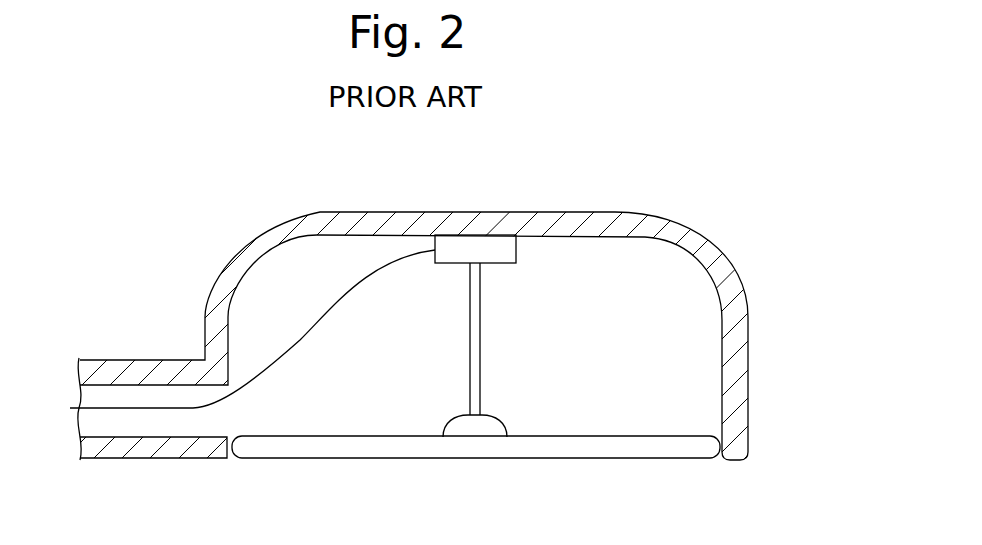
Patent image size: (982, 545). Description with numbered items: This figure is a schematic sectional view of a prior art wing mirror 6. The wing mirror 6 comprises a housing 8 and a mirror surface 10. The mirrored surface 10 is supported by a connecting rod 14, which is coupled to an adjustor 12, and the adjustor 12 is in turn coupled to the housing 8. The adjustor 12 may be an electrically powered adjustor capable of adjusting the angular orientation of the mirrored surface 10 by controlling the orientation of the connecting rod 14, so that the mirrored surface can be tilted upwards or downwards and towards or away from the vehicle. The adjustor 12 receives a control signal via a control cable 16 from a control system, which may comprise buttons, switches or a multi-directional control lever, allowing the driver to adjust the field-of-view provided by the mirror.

The wing mirror 6 is at (556, 162).
The housing 8 is at (690, 230).
The mirror surface 10 is at (610, 459).
The adjustor 12 is at (507, 264).
The connecting rod 14 is at (481, 352).
The control cable 16 is at (327, 322).